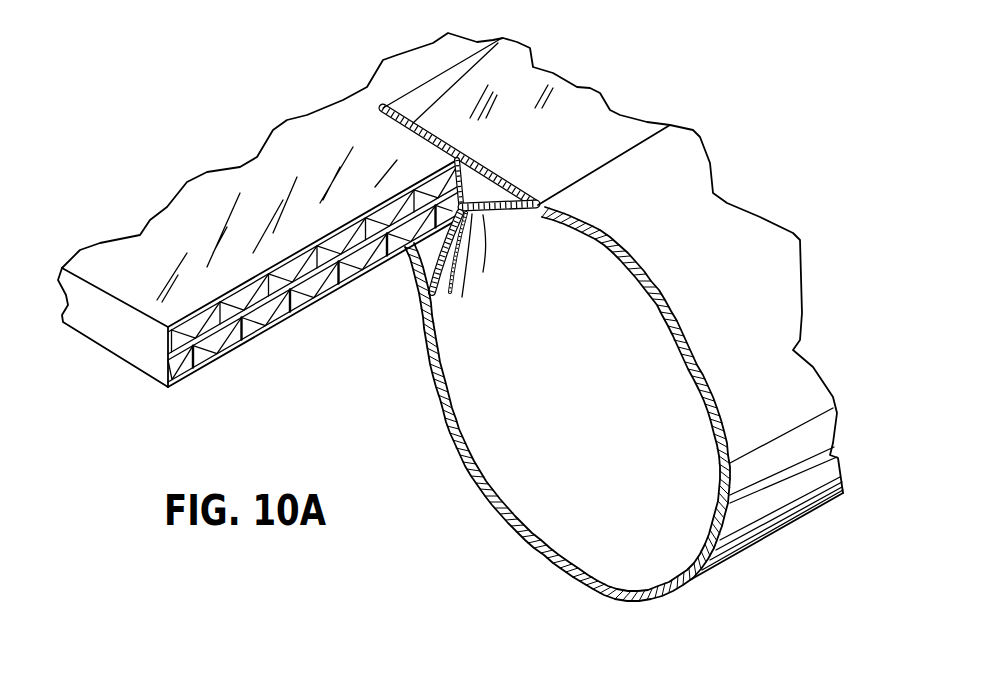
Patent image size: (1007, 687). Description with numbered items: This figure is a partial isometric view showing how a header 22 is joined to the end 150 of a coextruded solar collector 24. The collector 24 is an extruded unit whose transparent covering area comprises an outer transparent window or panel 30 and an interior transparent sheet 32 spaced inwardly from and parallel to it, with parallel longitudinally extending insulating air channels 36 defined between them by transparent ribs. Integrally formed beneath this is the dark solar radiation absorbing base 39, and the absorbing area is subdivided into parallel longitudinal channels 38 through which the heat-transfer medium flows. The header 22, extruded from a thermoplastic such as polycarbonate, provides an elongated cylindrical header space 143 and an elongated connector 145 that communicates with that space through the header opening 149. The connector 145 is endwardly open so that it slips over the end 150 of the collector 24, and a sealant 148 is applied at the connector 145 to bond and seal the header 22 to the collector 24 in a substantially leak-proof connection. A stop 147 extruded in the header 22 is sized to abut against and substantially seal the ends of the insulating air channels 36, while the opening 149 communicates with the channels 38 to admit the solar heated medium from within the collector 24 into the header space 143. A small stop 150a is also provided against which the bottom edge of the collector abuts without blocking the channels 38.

The header 22 is at (444, 412).
The solar collector 24 is at (289, 150).
The outer transparent window 30 is at (190, 232).
The interior transparent sheet 32 is at (217, 350).
The insulating air channels 36 is at (182, 333).
The channels 38 is at (252, 330).
The solar radiation absorbing base 39 is at (306, 309).
The header space 143 is at (498, 433).
The connector 145 is at (468, 130).
The stop 147 is at (468, 185).
The sealant 148 is at (412, 122).
The header opening 149 is at (487, 220).
The collector end 150 is at (485, 222).
The small stop 150a is at (465, 217).